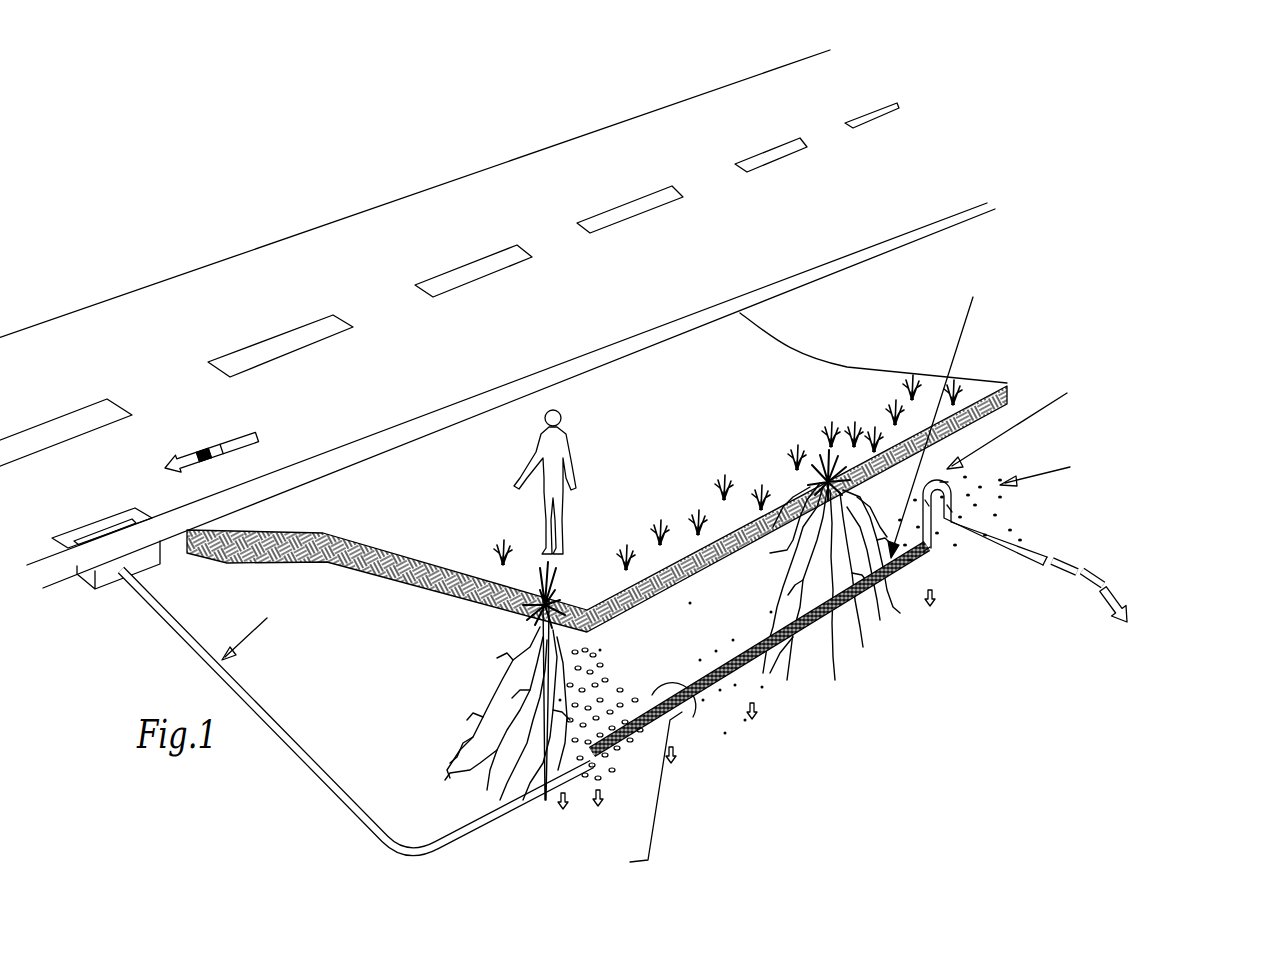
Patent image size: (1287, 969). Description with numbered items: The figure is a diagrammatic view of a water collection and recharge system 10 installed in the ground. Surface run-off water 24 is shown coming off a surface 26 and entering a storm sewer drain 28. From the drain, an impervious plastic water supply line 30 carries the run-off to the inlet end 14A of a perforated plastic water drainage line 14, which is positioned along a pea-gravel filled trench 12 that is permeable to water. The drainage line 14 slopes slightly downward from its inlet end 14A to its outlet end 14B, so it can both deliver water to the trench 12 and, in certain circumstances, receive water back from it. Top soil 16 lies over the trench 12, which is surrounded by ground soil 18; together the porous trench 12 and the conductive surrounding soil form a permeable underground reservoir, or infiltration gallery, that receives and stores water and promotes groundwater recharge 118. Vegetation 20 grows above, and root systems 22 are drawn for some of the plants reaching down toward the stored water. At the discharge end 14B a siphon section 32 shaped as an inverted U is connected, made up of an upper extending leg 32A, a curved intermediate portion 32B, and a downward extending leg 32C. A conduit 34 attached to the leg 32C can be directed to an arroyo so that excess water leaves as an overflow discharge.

The system 10 is at (860, 753).
The pea-gravel filled trench 12 is at (627, 655).
The perforated plastic water drainage line 14 is at (733, 658).
The inlet end 14A is at (607, 763).
The outlet end 14B is at (927, 552).
The top soil 16 is at (446, 473).
The surrounding ground soil 18 is at (415, 613).
The vegetation 20 is at (763, 470).
The root systems 22 is at (497, 673).
The surface run-off water 24 is at (213, 447).
The surface 26 is at (518, 178).
The storm sewer drain 28 is at (107, 527).
The impervious plastic water supply line 30 is at (300, 750).
The siphon section 32 is at (955, 468).
The upper extending leg 32A is at (927, 507).
The curved intermediate portion 32B is at (945, 478).
The downward extending leg 32C is at (950, 508).
The conduit 34 is at (1027, 563).
The groundwater recharge 118 is at (907, 642).